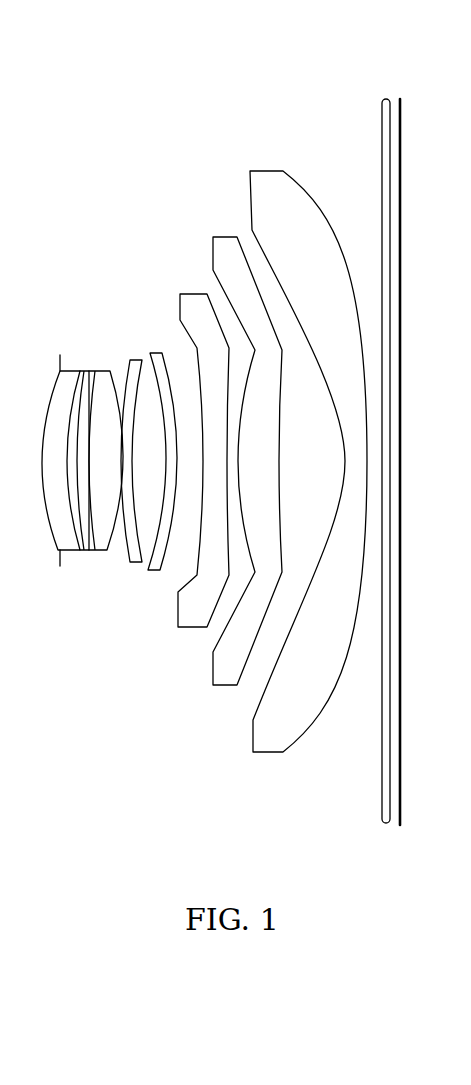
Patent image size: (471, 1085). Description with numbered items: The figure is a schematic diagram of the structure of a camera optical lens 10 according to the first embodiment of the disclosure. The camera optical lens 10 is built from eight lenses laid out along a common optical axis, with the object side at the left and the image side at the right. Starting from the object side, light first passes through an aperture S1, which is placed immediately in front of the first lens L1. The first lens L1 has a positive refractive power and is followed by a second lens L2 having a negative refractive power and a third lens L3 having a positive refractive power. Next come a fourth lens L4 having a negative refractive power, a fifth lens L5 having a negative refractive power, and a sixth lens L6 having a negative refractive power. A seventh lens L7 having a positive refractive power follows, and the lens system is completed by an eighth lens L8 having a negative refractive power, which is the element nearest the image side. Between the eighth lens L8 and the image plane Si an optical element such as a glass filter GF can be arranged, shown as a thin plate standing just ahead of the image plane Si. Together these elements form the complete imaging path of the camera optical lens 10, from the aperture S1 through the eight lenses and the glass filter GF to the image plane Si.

The camera optical lens 10 is at (248, 32).
The aperture S1 is at (43, 463).
The first lens L1 is at (65, 475).
The second lens L2 is at (87, 450).
The third lens L3 is at (106, 442).
The fourth lens L4 is at (134, 452).
The fifth lens L5 is at (162, 450).
The sixth lens L6 is at (203, 450).
The seventh lens L7 is at (247, 450).
The eighth lens L8 is at (308, 449).
The glass filter GF is at (380, 449).
The image plane Si is at (401, 450).